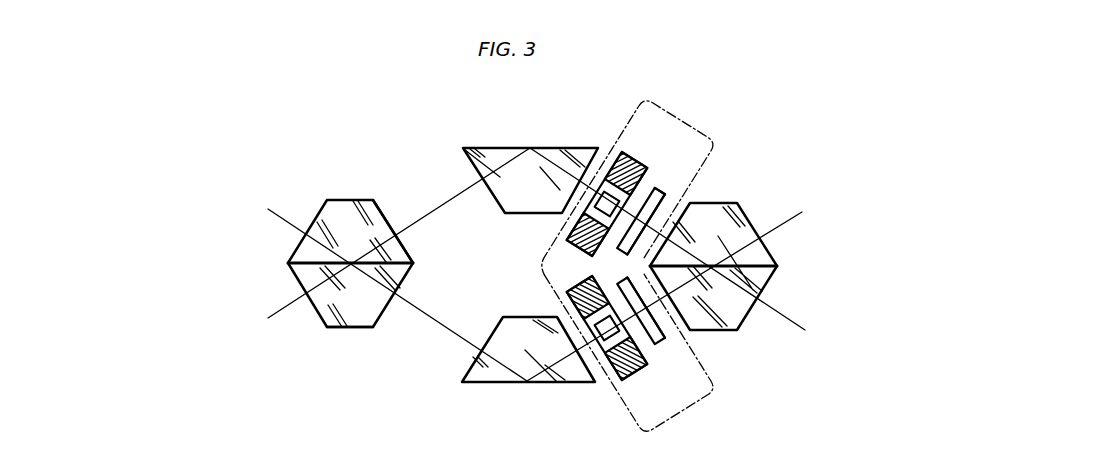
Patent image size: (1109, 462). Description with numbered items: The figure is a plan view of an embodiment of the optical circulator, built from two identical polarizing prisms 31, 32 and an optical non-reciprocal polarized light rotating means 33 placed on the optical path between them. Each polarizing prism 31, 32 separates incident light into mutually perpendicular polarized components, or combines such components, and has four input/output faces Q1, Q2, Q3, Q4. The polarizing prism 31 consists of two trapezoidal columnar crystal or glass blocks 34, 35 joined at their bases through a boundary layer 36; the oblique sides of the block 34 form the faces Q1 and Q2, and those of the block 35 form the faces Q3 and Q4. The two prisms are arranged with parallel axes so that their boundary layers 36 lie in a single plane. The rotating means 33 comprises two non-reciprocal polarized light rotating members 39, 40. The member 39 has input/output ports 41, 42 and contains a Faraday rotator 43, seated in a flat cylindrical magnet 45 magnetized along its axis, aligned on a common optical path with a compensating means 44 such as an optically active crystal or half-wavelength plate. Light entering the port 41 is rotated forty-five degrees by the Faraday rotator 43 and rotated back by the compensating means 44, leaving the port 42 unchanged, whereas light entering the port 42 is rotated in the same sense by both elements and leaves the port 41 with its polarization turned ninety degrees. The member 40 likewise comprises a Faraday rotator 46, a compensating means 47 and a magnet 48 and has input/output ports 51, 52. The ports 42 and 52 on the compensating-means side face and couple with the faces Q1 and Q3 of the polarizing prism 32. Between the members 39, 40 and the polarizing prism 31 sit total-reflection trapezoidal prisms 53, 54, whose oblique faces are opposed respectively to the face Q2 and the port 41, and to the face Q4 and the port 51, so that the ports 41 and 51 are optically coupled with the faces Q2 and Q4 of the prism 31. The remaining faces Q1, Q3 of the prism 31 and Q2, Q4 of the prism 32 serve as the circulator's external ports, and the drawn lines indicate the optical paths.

The polarizing prism 31 is at (350, 199).
The polarizing prism 32 is at (789, 193).
The optical non-reciprocal polarized light rotating means 33 is at (705, 140).
The crystal or glass block 34 is at (376, 219).
The crystal or glass block 35 is at (352, 319).
The boundary layer 36 is at (405, 262).
The non-reciprocal polarized light rotating member 39 is at (662, 190).
The non-reciprocal polarized light rotating member 40 is at (662, 345).
The input/output port 41 is at (619, 154).
The input/output port 42 is at (668, 205).
The Faraday rotator 43 is at (601, 177).
The compensating means 44 is at (660, 225).
The magnet 45 is at (568, 236).
The Faraday rotator 46 is at (600, 366).
The compensating means 47 is at (652, 364).
The magnet 48 is at (606, 372).
The input/output port 51 is at (556, 306).
The input/output port 52 is at (665, 340).
The trapezoidal prism 53 is at (492, 147).
The trapezoidal prism 54 is at (496, 383).
The input/output face Q1 is at (313, 223).
The input/output face Q2 is at (404, 238).
The input/output face Q3 is at (308, 309).
The input/output face Q4 is at (386, 309).